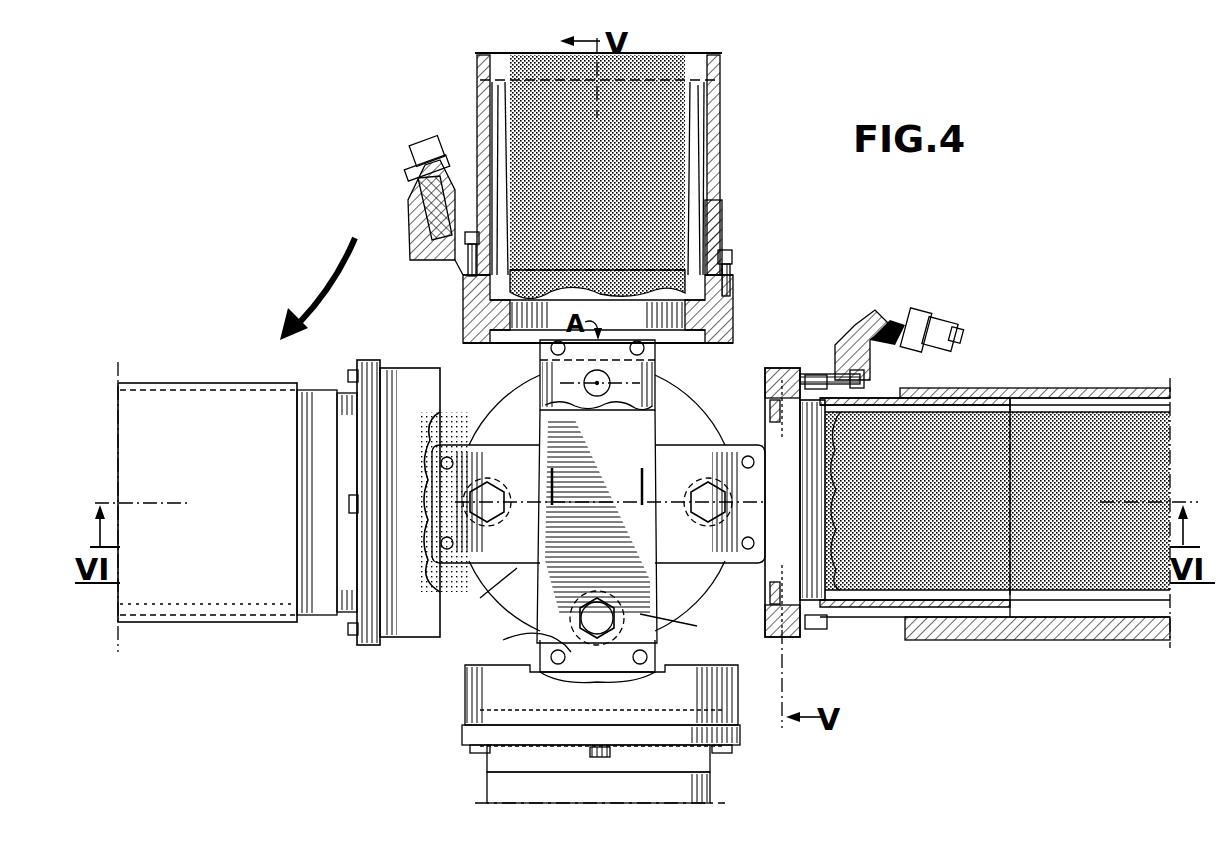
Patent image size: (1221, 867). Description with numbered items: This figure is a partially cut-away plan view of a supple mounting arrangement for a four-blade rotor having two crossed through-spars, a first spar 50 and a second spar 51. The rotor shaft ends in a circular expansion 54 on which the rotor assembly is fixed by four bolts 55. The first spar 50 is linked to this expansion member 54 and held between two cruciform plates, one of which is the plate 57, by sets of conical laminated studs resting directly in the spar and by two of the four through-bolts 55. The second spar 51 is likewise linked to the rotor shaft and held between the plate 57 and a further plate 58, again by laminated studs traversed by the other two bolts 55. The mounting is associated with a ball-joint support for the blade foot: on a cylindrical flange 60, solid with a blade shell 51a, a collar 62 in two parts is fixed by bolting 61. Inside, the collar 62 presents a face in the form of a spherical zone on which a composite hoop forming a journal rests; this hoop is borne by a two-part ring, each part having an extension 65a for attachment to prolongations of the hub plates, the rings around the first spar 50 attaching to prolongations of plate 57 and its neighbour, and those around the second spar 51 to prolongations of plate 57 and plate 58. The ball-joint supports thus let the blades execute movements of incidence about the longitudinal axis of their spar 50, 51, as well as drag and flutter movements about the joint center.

The first spar 50 is at (942, 510).
The second spar 51 is at (612, 191).
The blade shell 51a is at (713, 160).
The circular expansion 54 is at (500, 412).
The bolts 55 is at (492, 524).
The cruciform plate 57 is at (491, 597).
The plate 58 is at (684, 626).
The cylindrical flange 60 is at (708, 225).
The bolting 61 is at (728, 262).
The collar 62 is at (730, 320).
The extension 65a is at (517, 644).